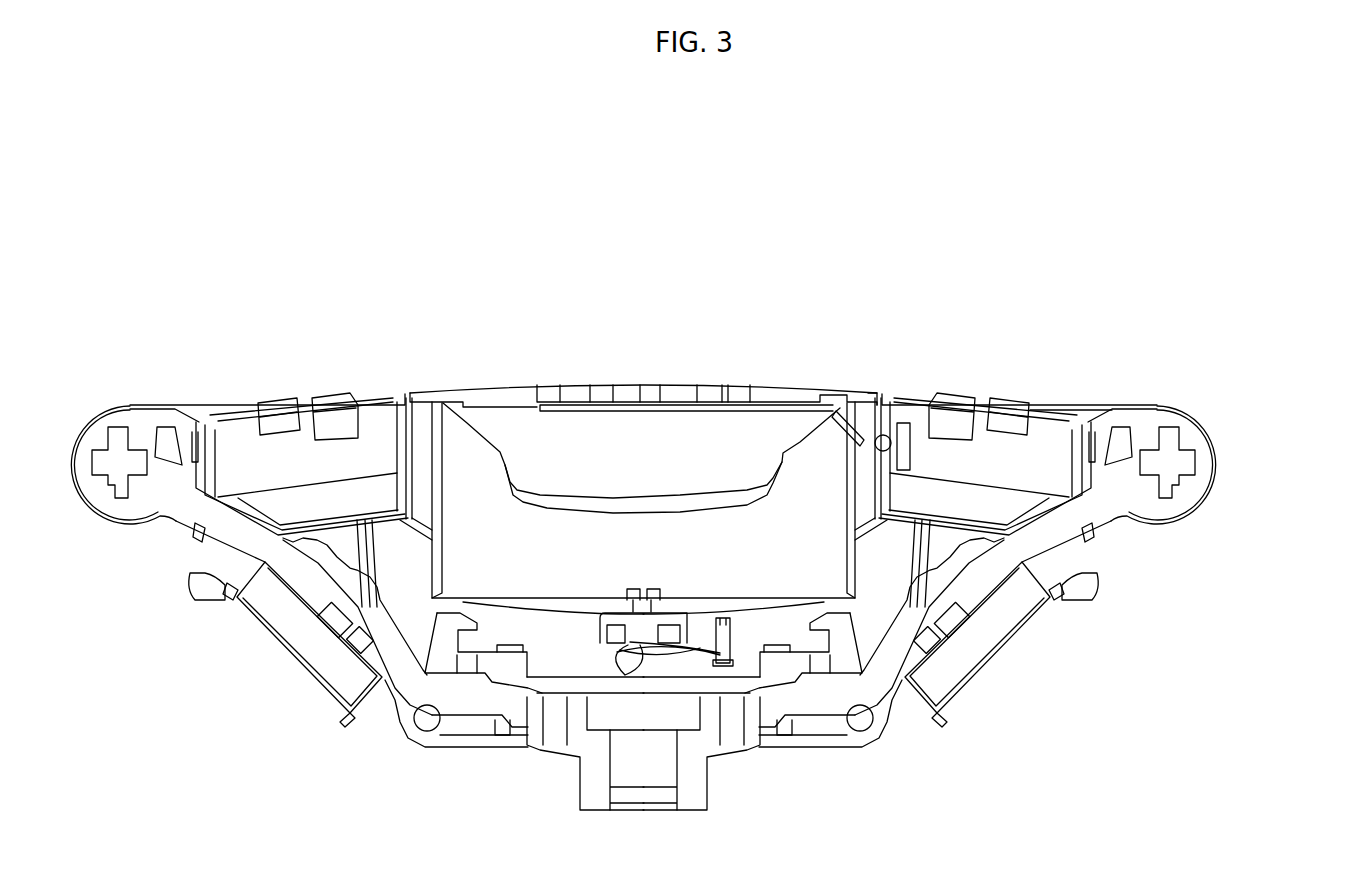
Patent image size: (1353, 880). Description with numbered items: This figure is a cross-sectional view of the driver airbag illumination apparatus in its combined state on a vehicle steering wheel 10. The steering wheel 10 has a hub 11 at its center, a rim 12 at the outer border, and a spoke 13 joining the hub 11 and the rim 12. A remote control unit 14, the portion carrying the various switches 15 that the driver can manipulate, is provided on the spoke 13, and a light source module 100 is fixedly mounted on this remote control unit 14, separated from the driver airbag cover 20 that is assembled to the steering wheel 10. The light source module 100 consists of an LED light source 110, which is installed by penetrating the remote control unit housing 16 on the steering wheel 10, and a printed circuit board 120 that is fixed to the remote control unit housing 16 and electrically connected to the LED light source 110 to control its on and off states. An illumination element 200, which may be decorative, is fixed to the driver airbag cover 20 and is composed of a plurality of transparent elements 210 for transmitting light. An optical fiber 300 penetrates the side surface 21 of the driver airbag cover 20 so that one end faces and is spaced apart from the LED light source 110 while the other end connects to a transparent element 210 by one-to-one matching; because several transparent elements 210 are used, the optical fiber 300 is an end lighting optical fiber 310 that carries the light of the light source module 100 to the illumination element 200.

The steering wheel 10 is at (217, 390).
The hub 11 is at (482, 695).
The rim 12 is at (1213, 477).
The spoke 13 is at (1057, 548).
The remote control unit 14 is at (1066, 395).
The switches 15 is at (1003, 398).
The remote control unit housing 16 is at (910, 396).
The driver airbag cover 20 is at (478, 398).
The side surface 21 is at (903, 697).
The light source module 100 is at (979, 503).
The LED light source 110 is at (877, 440).
The printed circuit board 120 is at (907, 447).
The illumination element 200 is at (643, 284).
The transparent element 210 is at (737, 400).
The optical fiber 300 is at (625, 309).
The end lighting optical fiber 310 is at (547, 415).